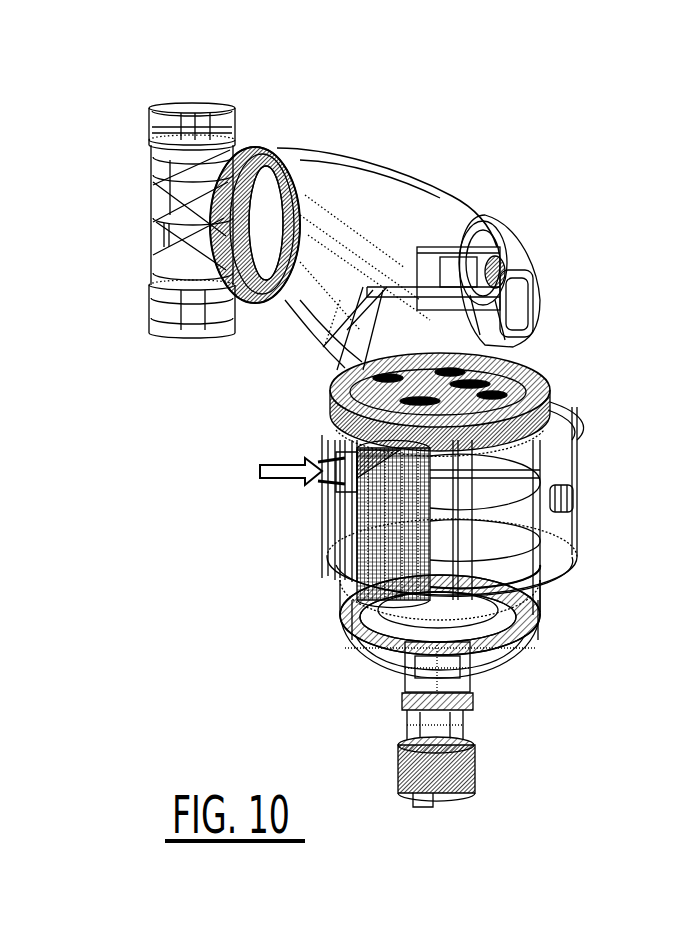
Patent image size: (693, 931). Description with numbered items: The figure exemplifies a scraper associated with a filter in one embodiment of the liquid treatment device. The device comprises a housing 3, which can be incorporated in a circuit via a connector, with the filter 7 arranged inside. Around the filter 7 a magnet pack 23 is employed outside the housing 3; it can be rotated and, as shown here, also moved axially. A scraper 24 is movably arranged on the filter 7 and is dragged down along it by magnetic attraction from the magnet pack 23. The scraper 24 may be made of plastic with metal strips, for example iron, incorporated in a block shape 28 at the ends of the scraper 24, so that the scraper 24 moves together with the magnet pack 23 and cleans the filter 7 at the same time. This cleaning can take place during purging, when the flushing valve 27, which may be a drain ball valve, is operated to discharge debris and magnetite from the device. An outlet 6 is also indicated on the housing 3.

The housing 3 is at (400, 173).
The outlet port 6 is at (509, 276).
The magnet pack 23 is at (568, 457).
The scraper 24 is at (287, 468).
The block shape 28 is at (370, 483).
The filter 7 is at (377, 540).
The flushing valve 27 is at (455, 712).